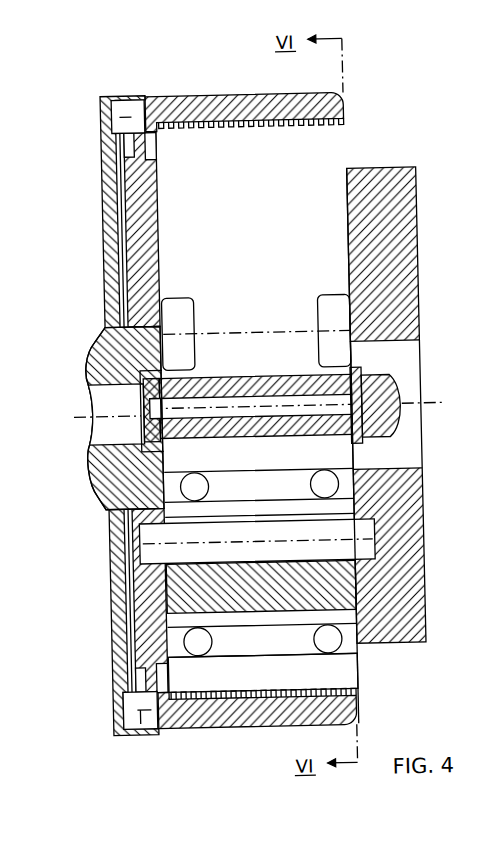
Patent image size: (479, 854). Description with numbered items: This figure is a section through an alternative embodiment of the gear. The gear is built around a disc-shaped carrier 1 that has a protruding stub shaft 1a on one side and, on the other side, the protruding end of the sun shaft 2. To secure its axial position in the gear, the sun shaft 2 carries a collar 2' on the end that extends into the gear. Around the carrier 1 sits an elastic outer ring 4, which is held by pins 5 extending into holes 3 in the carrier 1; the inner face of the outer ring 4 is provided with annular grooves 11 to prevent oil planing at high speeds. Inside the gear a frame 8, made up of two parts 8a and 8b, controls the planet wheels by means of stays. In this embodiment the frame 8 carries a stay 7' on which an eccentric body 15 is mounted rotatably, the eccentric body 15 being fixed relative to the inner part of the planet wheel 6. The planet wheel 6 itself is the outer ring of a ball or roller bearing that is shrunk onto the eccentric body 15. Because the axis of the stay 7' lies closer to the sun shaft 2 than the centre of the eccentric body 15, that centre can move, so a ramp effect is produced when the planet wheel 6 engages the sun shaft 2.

The disc-shaped carrier 1 is at (117, 195).
The stub shaft 1a is at (106, 390).
The sun shaft 2 is at (300, 406).
The collar 2' is at (108, 427).
The holes 3 is at (123, 140).
The elastic outer ring 4 is at (224, 99).
The pins 5 is at (131, 105).
The planet wheel 6 is at (336, 672).
The stay 7' is at (302, 540).
The frame 8 is at (413, 405).
The first frame part 8a is at (136, 230).
The second frame part 8b is at (408, 273).
The annular grooves 11 is at (268, 131).
The eccentric body 15 is at (336, 585).